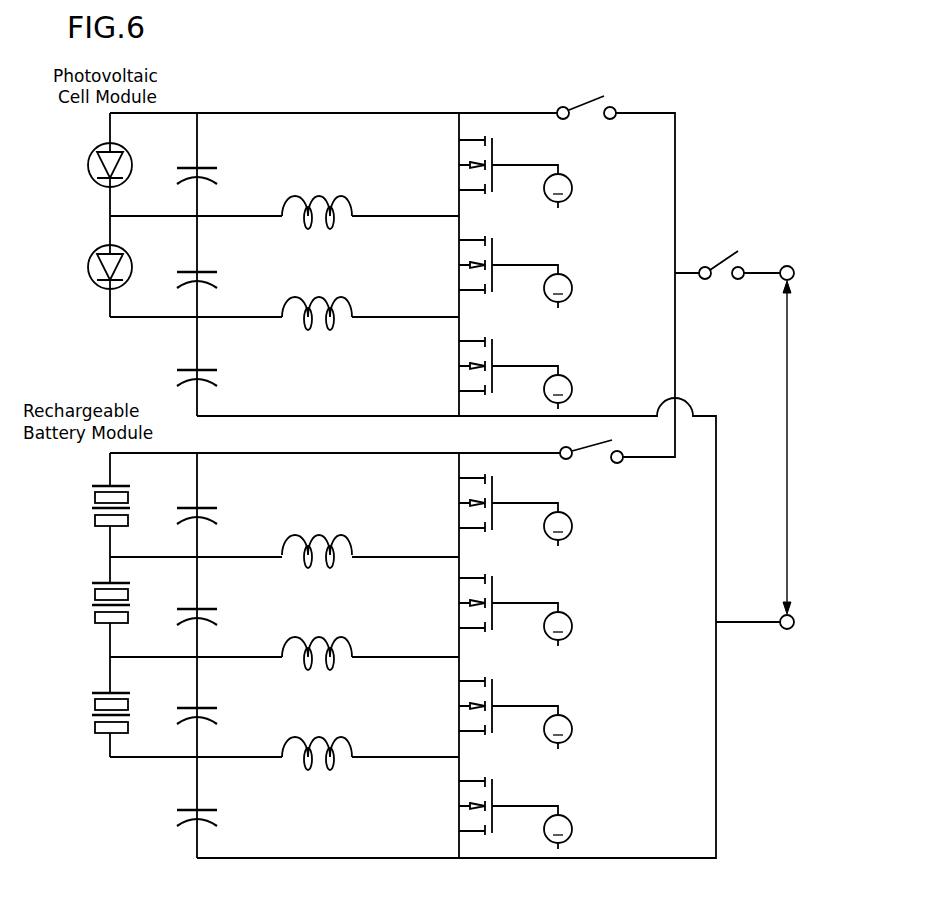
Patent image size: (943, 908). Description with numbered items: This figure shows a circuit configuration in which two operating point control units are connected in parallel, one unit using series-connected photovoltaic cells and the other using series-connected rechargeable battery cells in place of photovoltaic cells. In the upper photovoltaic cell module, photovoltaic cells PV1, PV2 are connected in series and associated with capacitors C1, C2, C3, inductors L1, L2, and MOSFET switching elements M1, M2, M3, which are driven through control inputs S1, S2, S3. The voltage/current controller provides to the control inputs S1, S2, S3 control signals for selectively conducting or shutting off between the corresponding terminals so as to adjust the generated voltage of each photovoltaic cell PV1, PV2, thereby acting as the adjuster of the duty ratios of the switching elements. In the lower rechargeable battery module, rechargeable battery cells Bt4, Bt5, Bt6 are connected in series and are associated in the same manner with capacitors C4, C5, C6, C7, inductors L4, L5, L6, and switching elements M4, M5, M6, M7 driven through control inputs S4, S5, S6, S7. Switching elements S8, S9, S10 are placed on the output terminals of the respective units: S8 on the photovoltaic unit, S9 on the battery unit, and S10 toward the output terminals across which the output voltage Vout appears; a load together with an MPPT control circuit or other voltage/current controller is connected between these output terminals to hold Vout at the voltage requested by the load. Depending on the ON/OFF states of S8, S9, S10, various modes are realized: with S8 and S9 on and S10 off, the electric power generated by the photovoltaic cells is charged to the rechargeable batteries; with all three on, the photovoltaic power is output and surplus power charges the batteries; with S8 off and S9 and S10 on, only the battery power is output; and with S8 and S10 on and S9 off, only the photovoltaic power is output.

The photovoltaic cell PV1 is at (87, 165).
The photovoltaic cell PV2 is at (87, 267).
The capacitor C1 is at (203, 163).
The capacitor C2 is at (203, 265).
The capacitor C3 is at (202, 363).
The capacitor C4 is at (203, 502).
The capacitor C5 is at (203, 602).
The capacitor C6 is at (202, 701).
The capacitor C7 is at (202, 803).
The inductor L1 is at (317, 199).
The inductor L2 is at (317, 300).
The inductor L4 is at (317, 538).
The inductor L5 is at (317, 640).
The inductor L6 is at (317, 739).
The switching element (MOSFET) M1 is at (455, 165).
The switching element (MOSFET) M2 is at (455, 265).
The switching element (MOSFET) M3 is at (455, 366).
The switching element (MOSFET) M4 is at (455, 503).
The switching element (MOSFET) M5 is at (455, 603).
The switching element (MOSFET) M6 is at (455, 706).
The switching element (MOSFET) M7 is at (455, 806).
The control input S1 is at (541, 176).
The control input S2 is at (541, 276).
The control input S3 is at (541, 377).
The control input S4 is at (541, 514).
The control input S5 is at (541, 614).
The control input S6 is at (541, 717).
The control input S7 is at (541, 817).
The switching element S8 is at (586, 89).
The switching element S9 is at (603, 470).
The switching element S10 is at (721, 282).
The rechargeable battery cell (chemical cell) Bt4 is at (86, 497).
The rechargeable battery cell (chemical cell) Bt5 is at (86, 594).
The rechargeable battery cell (chemical cell) Bt6 is at (86, 704).
The output voltage Vout is at (811, 447).